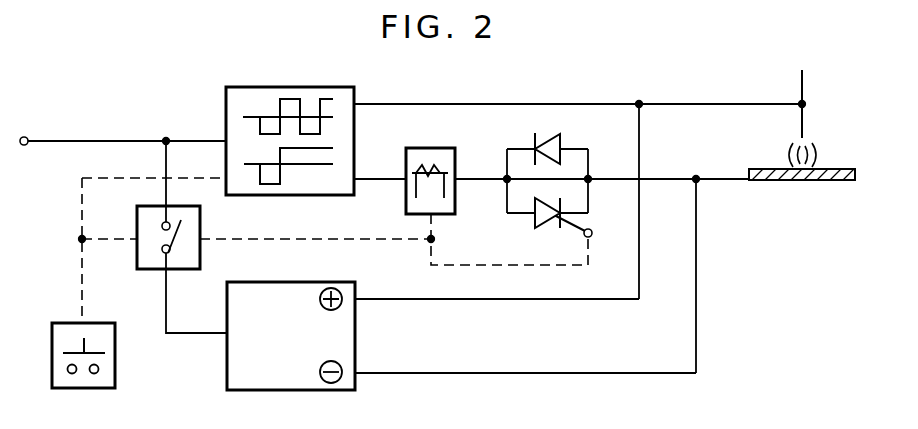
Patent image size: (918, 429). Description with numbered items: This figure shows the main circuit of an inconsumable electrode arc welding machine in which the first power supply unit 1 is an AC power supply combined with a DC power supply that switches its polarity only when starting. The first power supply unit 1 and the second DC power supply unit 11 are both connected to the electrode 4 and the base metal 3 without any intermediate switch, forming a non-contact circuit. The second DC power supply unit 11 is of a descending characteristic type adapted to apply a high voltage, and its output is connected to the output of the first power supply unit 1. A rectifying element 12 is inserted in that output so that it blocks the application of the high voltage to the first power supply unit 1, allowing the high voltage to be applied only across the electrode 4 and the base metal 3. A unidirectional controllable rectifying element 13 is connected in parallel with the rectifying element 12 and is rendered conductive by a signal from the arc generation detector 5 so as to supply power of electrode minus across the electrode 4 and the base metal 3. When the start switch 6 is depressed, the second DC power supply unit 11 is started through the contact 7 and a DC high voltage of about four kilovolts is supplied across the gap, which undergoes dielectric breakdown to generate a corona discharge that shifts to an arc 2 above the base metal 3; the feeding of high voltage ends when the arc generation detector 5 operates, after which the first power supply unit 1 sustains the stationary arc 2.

The first power supply unit 1 is at (226, 103).
The arc 2 is at (818, 158).
The base metal 3 is at (832, 184).
The electrode 4 is at (806, 84).
The arc generation detector 5 is at (457, 153).
The start switch 6 is at (117, 367).
The contact 7 is at (137, 261).
The second DC power supply unit 11 is at (357, 291).
The rectifying element 12 is at (561, 138).
The unidirectional controllable rectifying element 13 is at (539, 218).